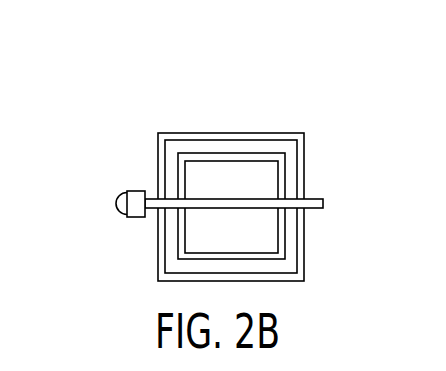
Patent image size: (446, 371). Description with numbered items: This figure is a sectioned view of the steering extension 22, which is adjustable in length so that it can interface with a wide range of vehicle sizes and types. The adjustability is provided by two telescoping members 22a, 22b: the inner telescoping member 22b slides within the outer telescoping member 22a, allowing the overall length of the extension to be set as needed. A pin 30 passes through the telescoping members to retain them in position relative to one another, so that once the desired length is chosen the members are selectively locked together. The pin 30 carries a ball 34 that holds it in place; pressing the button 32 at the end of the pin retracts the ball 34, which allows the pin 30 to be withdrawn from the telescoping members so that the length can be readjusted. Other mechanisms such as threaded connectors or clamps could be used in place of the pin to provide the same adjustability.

The steering extension 22 is at (232, 165).
The telescoping member 22a is at (305, 138).
The telescoping member 22b is at (285, 180).
The pin 30 is at (143, 214).
The button 32 is at (98, 203).
The ball 34 is at (341, 197).